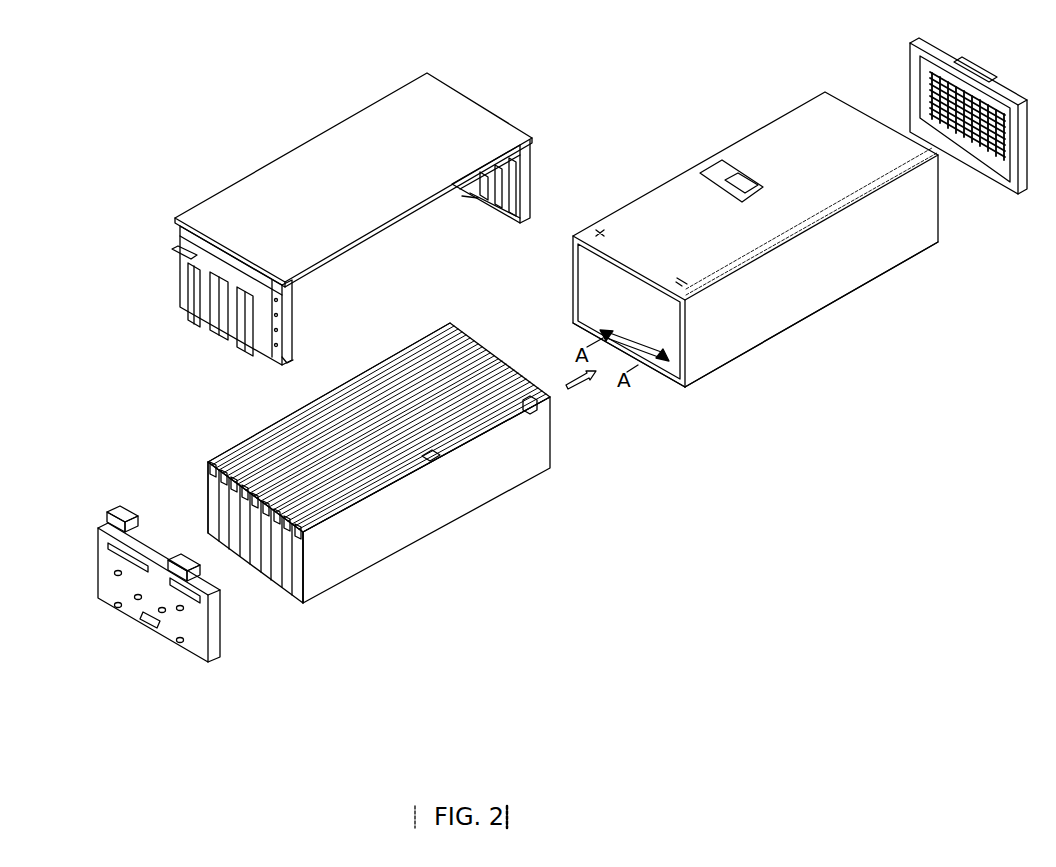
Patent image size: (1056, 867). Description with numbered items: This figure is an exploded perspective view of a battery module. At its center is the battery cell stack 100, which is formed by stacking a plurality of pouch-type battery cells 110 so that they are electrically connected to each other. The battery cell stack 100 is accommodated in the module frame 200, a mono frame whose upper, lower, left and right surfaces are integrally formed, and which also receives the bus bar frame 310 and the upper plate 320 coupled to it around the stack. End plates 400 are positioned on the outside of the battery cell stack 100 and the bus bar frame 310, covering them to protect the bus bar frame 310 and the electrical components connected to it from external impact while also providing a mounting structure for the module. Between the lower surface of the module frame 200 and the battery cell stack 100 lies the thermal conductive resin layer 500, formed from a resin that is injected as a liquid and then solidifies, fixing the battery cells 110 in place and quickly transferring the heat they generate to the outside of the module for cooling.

The battery cell stack 100 is at (386, 503).
The battery cell 110 is at (480, 492).
The module frame 200 is at (755, 274).
The bus bar frame 310 is at (178, 282).
The upper plate 320 is at (347, 135).
The end plate 400 is at (910, 78).
The thermal conductive resin layer 500 is at (668, 362).